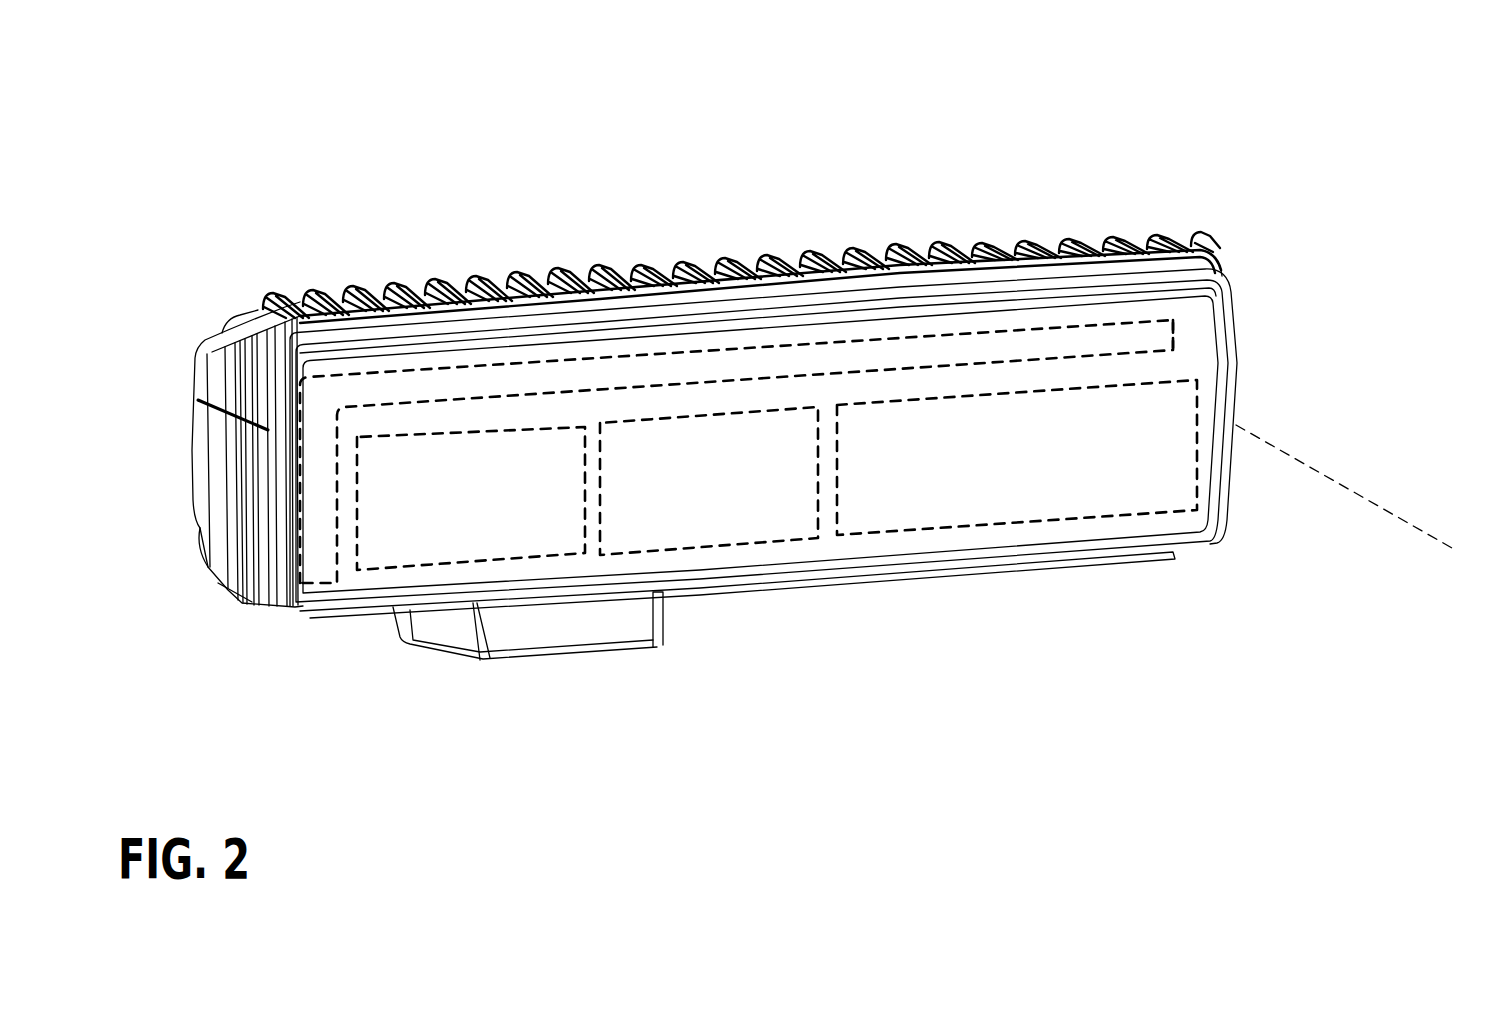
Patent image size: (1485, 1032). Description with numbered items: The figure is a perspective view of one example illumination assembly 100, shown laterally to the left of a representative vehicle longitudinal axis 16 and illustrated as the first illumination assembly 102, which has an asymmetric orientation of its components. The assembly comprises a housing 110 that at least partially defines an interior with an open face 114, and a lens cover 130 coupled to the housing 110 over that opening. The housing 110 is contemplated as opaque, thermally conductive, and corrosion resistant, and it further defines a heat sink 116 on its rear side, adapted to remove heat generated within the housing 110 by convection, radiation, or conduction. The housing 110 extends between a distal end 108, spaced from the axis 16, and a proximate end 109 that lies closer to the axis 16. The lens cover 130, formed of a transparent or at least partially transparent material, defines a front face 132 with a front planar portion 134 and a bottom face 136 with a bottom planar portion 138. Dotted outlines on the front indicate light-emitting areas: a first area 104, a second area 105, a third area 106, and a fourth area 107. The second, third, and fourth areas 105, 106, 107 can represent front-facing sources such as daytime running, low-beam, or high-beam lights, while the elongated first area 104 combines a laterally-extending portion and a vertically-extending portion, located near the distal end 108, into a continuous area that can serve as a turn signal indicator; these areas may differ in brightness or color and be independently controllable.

The illumination assembly 100 is at (168, 143).
The first illumination assembly 102 is at (668, 236).
The first area 104 is at (310, 605).
The second area 105 is at (383, 568).
The third area 106 is at (779, 542).
The fourth area 107 is at (947, 532).
The distal end 108 is at (140, 340).
The proximate end 109 is at (1216, 226).
The housing 110 is at (208, 547).
The open face 114 is at (1222, 272).
The heat sink 116 is at (1006, 236).
The lens cover 130 is at (1236, 421).
The front face 132 is at (1198, 500).
The front planar portion 134 is at (1103, 392).
The bottom face 136 is at (640, 648).
The bottom planar portion 138 is at (537, 668).
The vehicle longitudinal axis 16 is at (1393, 512).